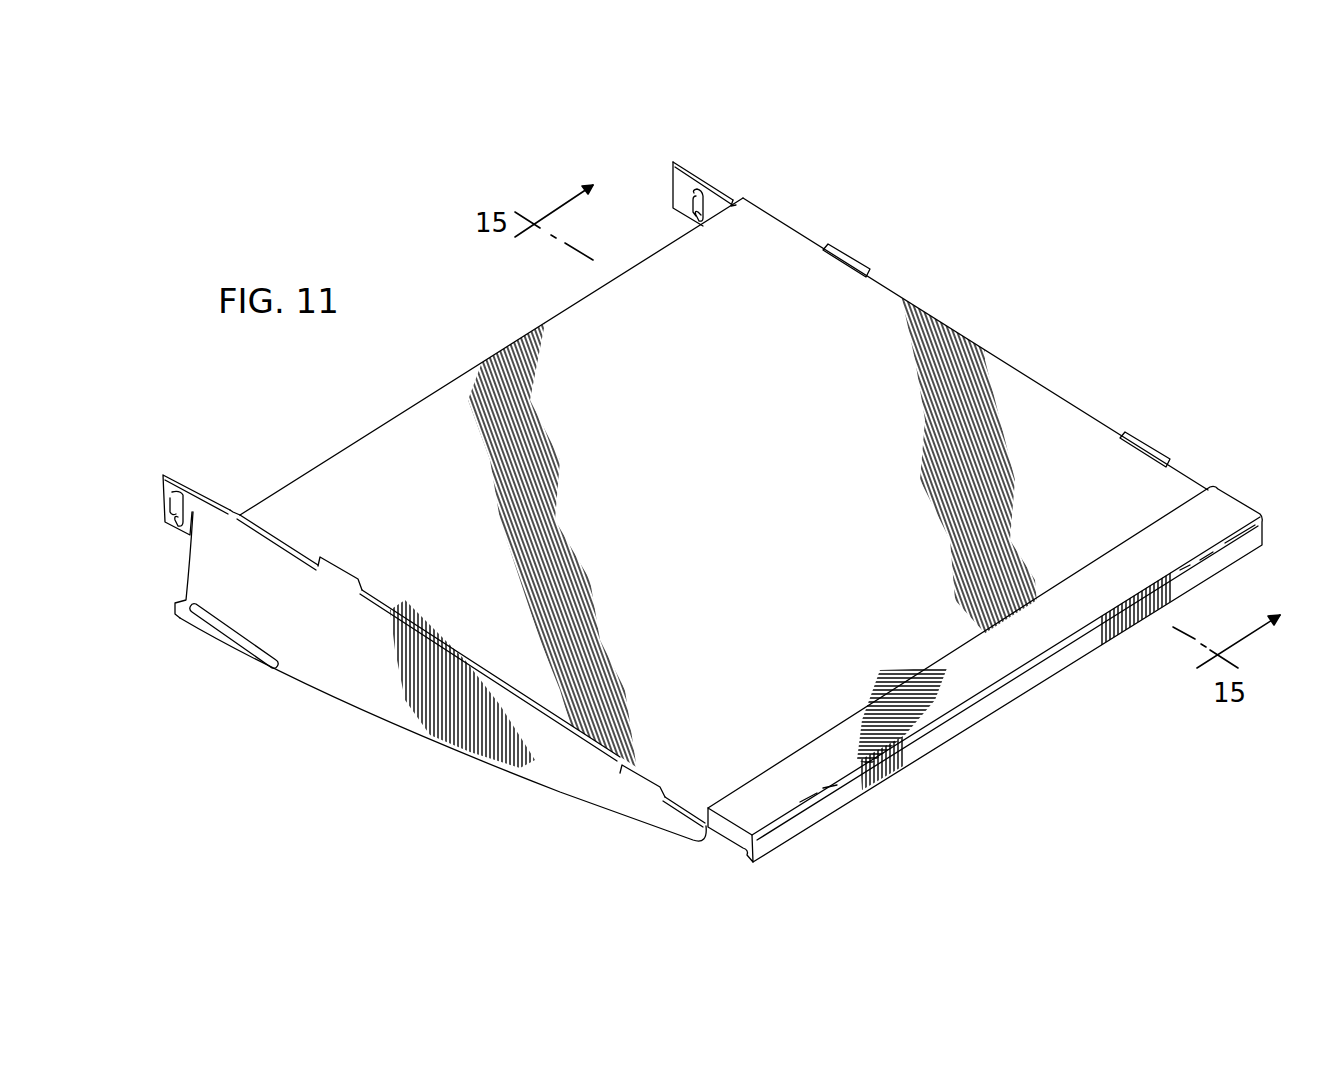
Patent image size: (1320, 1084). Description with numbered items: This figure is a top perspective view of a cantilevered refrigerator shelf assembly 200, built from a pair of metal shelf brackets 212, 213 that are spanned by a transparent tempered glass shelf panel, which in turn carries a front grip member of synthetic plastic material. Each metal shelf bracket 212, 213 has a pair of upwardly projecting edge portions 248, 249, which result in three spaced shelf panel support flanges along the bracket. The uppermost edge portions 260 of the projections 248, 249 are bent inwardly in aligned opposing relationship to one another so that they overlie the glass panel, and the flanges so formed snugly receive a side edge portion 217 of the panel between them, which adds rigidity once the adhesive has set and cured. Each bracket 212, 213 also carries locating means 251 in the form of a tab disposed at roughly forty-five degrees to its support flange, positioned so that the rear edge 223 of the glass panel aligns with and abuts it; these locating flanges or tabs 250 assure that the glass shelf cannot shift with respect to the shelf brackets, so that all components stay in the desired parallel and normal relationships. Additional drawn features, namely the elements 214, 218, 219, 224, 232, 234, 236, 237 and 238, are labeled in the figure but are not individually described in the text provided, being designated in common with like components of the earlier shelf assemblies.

The shelf assembly 200 is at (990, 236).
The metal shelf bracket 212 is at (358, 718).
The metal shelf bracket 213 is at (715, 177).
The front rail 214 is at (877, 295).
The side edge portion of the glass panel 217 is at (547, 668).
The right side edge 218 is at (1052, 383).
The upper fold edge 219 is at (397, 597).
The rear edge of the glass panel 223 is at (382, 420).
The top surface 224 is at (768, 486).
The slot 232 is at (247, 591).
The lower edge of flange 234 is at (590, 793).
The front hook bracket 236 is at (167, 527).
The rear hook bracket 237 is at (677, 183).
The notch 238 is at (176, 620).
The upwardly projecting edge portion 248 is at (637, 774).
The upwardly projecting edge portion 249 is at (332, 575).
The locating flange 250 is at (715, 843).
The locating means 251 is at (733, 195).
The uppermost edge portion 260 is at (838, 252).